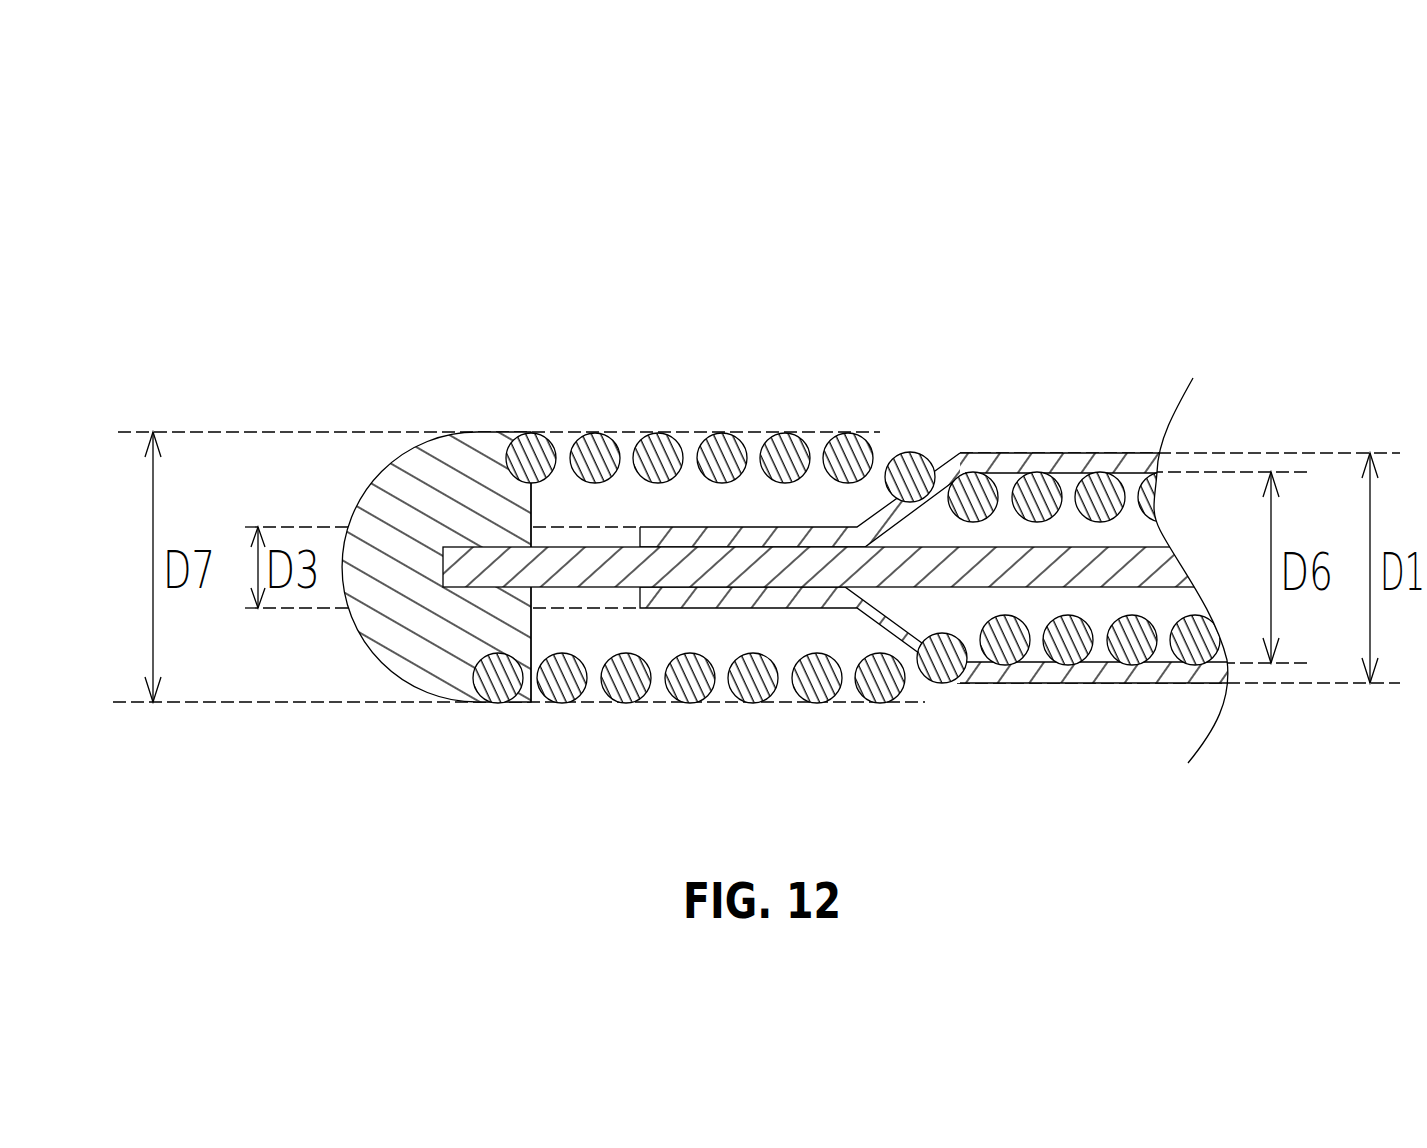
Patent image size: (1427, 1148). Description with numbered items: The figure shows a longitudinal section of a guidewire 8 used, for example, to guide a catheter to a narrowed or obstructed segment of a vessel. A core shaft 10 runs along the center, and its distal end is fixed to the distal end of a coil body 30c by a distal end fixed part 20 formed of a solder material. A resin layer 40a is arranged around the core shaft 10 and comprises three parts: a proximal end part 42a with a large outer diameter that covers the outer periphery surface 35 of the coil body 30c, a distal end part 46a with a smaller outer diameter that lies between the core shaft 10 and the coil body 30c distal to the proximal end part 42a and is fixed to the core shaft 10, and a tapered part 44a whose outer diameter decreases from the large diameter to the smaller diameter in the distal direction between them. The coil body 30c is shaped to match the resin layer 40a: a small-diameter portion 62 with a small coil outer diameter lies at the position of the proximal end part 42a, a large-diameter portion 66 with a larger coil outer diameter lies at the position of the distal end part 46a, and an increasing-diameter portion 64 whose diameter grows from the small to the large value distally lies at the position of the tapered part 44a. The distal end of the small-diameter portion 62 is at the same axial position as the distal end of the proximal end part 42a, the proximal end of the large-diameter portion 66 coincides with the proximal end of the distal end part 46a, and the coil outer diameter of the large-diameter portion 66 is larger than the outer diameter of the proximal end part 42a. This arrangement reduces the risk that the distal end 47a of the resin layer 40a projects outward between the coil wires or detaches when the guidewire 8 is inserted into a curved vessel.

The guidewire 8 is at (1080, 185).
The core shaft 10 is at (453, 570).
The distal end fixed part 20 is at (377, 500).
The coil body 30c is at (725, 461).
The outer periphery surface 35 is at (783, 433).
The resin layer 40a is at (1112, 472).
The proximal end part 42a is at (1060, 453).
The tapered part 44a is at (883, 627).
The distal end part 46a is at (767, 373).
The distal end 47a is at (637, 527).
The small-diameter portion 62 is at (1067, 647).
The increasing-diameter portion 64 is at (918, 458).
The large-diameter portion 66 is at (657, 432).